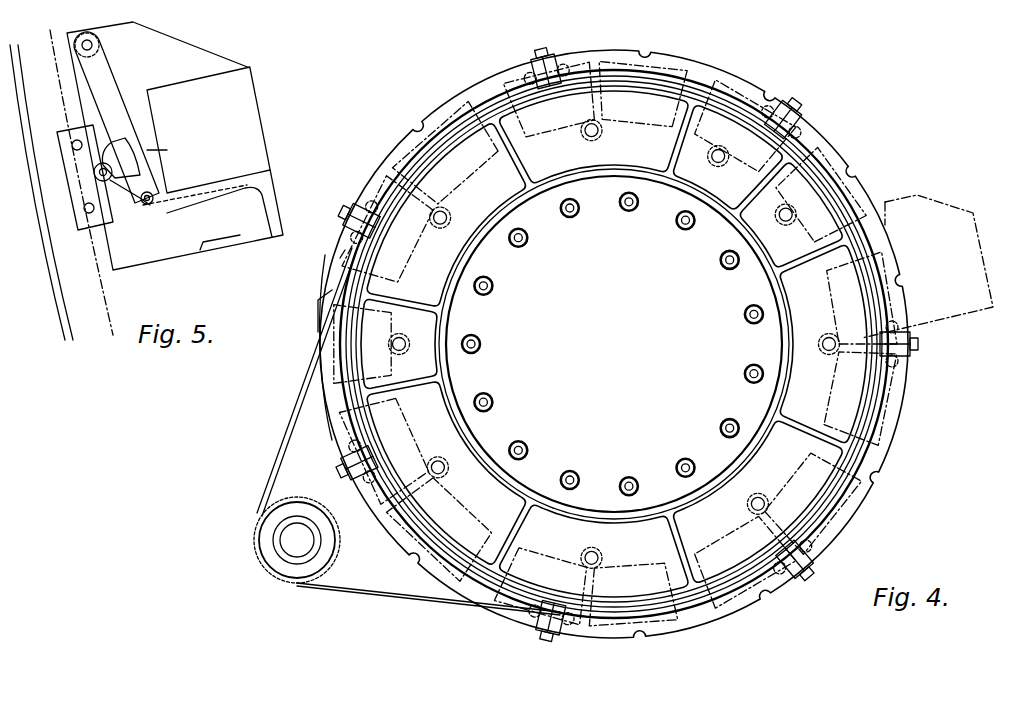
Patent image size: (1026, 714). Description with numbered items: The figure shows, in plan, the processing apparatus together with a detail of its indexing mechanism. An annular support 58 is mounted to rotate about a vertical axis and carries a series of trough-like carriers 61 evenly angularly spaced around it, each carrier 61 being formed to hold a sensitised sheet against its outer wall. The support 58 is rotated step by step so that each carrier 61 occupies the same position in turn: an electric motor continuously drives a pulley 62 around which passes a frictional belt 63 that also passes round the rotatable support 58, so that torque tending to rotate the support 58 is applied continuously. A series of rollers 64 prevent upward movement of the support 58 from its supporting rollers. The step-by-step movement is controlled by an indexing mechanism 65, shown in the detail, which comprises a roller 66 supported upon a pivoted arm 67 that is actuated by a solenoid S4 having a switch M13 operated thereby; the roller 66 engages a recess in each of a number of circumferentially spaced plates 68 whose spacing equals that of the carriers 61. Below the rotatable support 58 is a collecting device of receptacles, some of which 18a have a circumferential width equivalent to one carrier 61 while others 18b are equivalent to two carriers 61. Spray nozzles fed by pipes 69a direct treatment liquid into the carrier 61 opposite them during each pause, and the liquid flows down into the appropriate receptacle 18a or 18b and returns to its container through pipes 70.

In FIG. 4, the receptacle 18a is at (715, 195).
In FIG. 4, the receptacle 18b is at (538, 180).
In FIG. 4, the annular support 58 is at (343, 334).
In FIG. 5, the annular support 58 is at (72, 318).
In FIG. 4, the carrier 61 is at (503, 82).
In FIG. 4, the pulley 62 is at (272, 540).
In FIG. 4, the frictional belt 63 is at (268, 485).
In FIG. 4, the roller 64 is at (548, 55).
In FIG. 4, the indexing mechanism 65 is at (976, 310).
In FIG. 5, the roller 66 is at (94, 178).
In FIG. 5, the pivoted arm 67 is at (105, 72).
In FIG. 5, the plate 68 is at (93, 142).
In FIG. 4, the pipe 69a is at (518, 248).
In FIG. 4, the pipe 70 is at (591, 133).
In FIG. 5, the solenoid S4 is at (245, 113).
In FIG. 5, the switch M13 is at (258, 207).